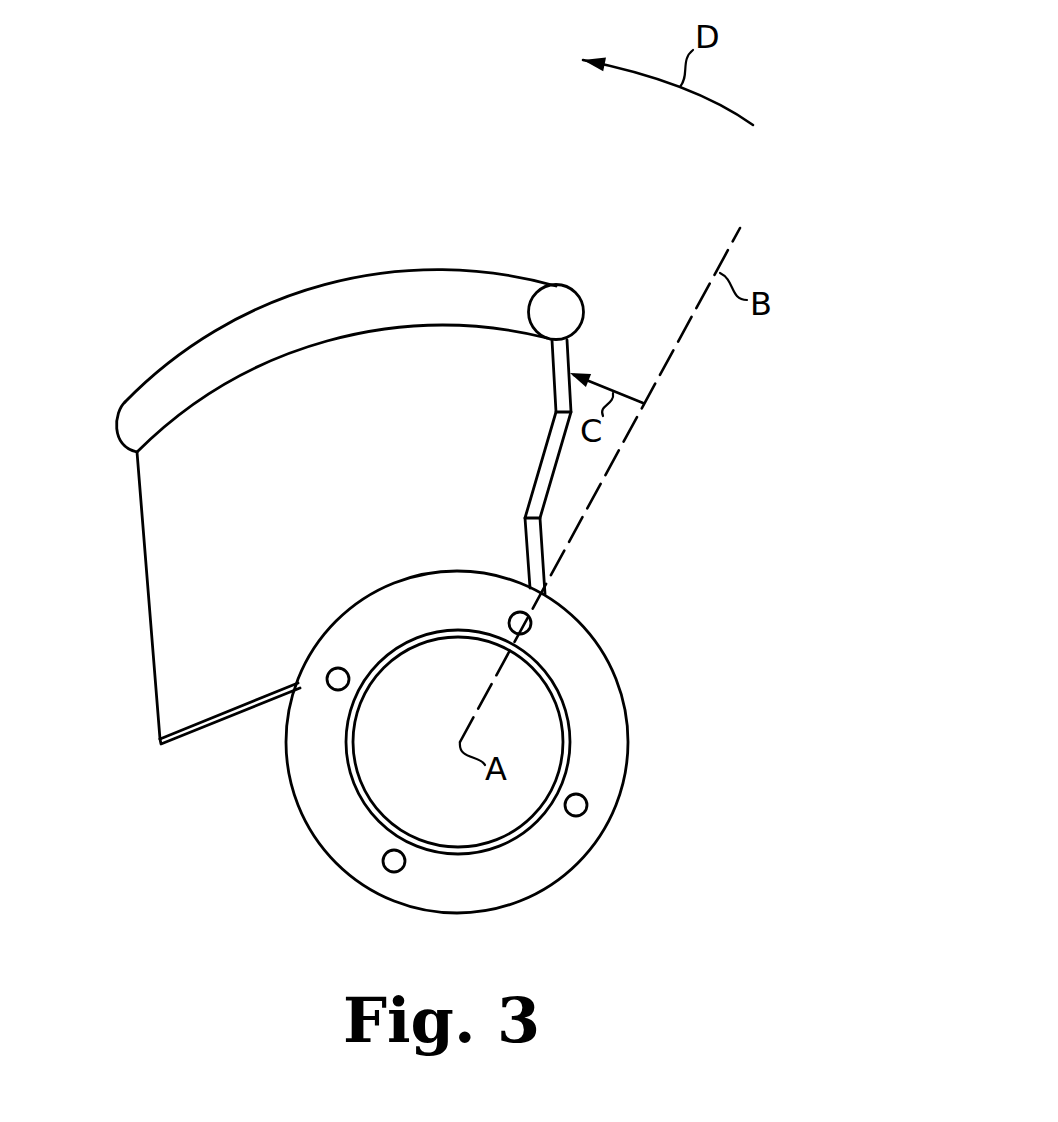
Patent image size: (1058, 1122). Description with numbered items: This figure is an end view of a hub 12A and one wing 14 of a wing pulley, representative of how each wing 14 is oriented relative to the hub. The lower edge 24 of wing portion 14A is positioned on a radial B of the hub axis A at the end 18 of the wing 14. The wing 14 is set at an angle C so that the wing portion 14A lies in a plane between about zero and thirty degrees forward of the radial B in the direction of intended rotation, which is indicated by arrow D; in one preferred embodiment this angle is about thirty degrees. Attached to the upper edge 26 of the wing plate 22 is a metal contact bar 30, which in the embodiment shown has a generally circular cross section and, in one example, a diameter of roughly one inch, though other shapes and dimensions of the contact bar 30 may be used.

The hub 12A is at (597, 735).
The wing 14 is at (309, 517).
The wing portion 14A is at (286, 590).
The end of wing 18 is at (560, 358).
The wing plate 22 is at (200, 688).
The lower edge 24 is at (216, 725).
The upper edge 26 is at (222, 393).
The metal contact bar 30 is at (327, 313).